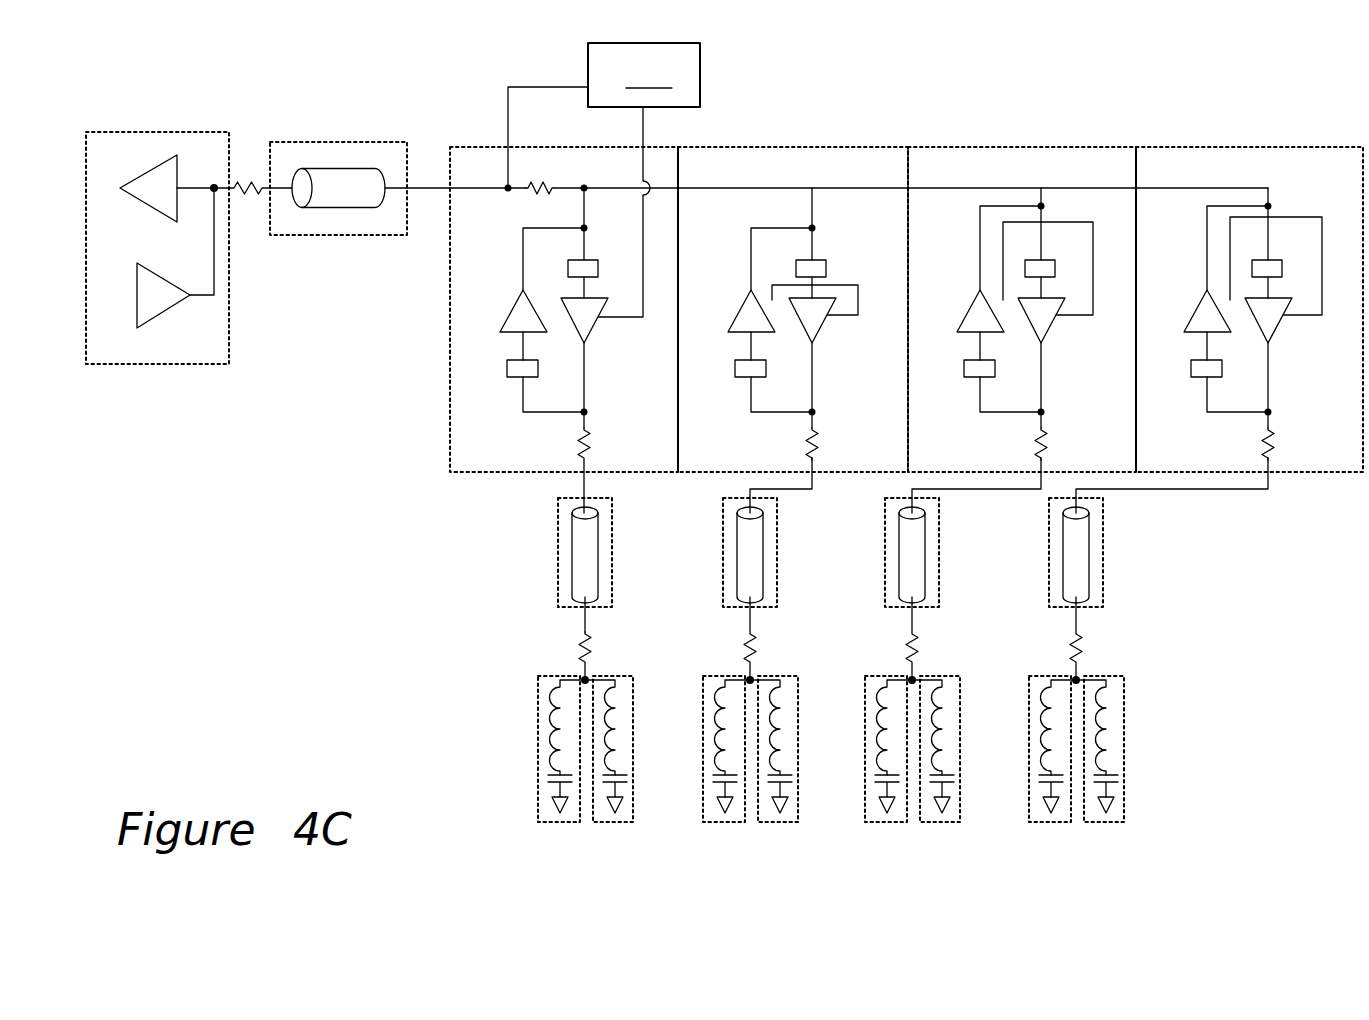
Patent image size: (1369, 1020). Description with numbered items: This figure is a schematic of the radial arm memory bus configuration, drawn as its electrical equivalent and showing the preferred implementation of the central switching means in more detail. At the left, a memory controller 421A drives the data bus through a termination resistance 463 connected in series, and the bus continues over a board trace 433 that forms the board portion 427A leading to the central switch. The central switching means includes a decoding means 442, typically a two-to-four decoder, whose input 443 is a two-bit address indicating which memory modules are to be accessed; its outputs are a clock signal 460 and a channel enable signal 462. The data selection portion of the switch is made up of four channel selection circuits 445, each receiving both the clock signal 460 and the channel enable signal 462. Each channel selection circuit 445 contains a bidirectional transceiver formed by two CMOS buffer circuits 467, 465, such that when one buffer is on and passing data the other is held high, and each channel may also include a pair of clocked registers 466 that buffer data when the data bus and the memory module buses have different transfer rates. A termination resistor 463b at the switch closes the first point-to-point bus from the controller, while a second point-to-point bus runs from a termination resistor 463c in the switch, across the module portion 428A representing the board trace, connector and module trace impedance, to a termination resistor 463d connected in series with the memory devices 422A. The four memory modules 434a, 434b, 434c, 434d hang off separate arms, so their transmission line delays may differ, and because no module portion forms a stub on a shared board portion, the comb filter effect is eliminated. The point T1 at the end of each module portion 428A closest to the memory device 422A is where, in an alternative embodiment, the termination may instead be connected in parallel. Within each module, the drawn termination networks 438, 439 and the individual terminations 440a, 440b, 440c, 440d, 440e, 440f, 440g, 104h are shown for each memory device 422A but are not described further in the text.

The memory controller 421A is at (207, 364).
The termination resistance 463 is at (252, 205).
The board trace 433 is at (325, 168).
The board portion 427A is at (320, 235).
The decoding means 442 is at (644, 75).
The input 443 is at (540, 87).
The clock signal 460 is at (1332, 332).
The channel selection circuit 445 is at (665, 147).
The termination resistor 463b is at (547, 177).
The clocked register 466 is at (597, 260).
The channel enable signal 462 is at (888, 359).
The CMOS buffer circuit 467 is at (512, 327).
The CMOS buffer circuit 465 is at (583, 320).
The termination resistor 463c is at (575, 443).
The memory module 434a is at (572, 544).
The memory module 434b is at (737, 545).
The memory module 434c is at (897, 545).
The memory module 434d is at (1063, 543).
The module portion 428A is at (558, 580).
The point T1 is at (576, 623).
The termination resistor 463d is at (590, 643).
The inductor 438 is at (548, 703).
The capacitor 439 is at (550, 778).
The memory device 422A is at (830, 753).
The termination 440a is at (555, 822).
The termination 440b is at (615, 822).
The termination 440c is at (723, 822).
The termination 440d is at (788, 822).
The termination 440e is at (885, 822).
The termination 440f is at (950, 822).
The termination 440g is at (1060, 822).
The termination 104h is at (1113, 822).